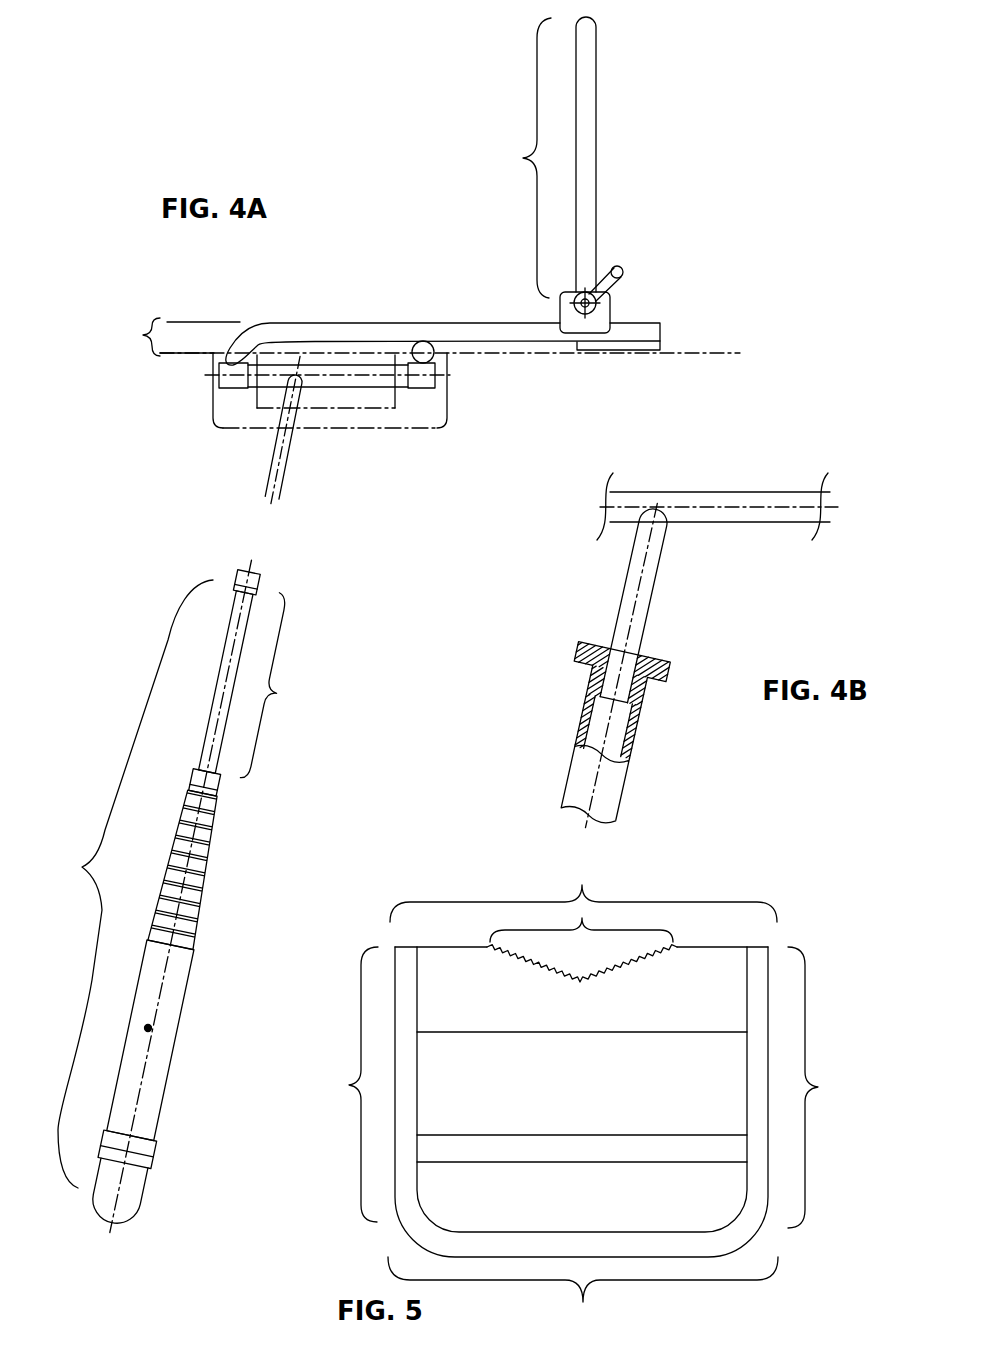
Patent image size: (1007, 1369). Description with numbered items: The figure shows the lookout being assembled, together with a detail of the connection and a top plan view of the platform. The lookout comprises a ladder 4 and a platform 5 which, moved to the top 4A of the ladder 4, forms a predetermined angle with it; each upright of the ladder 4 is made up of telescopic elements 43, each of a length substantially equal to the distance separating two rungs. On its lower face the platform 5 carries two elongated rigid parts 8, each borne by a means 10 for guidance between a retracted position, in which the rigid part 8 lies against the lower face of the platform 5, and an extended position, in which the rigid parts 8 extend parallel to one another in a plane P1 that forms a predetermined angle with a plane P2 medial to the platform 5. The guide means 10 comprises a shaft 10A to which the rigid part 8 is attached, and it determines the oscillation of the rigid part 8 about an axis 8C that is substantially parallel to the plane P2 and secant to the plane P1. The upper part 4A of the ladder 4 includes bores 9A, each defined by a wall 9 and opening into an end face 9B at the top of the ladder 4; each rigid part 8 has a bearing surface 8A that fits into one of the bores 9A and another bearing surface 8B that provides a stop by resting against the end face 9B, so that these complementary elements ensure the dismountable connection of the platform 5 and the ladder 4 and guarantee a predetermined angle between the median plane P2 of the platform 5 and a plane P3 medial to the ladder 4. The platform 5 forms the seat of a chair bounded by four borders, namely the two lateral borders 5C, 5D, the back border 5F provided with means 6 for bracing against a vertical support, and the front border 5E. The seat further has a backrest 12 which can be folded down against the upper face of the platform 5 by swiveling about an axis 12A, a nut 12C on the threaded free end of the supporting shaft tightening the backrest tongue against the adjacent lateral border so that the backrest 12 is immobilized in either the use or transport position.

In FIG. 4A, the backrest 12 is at (518, 158).
In FIG. 4A, the swiveling axis 12A is at (597, 302).
In FIG. 4A, the nut 12C is at (629, 242).
In FIG. 4A, the medial plane of platform P2 is at (737, 353).
In FIG. 4A, the platform 5 is at (143, 335).
In FIG. 5, the platform 5 is at (345, 1190).
In FIG. 4A, the means for guidance 10 is at (440, 415).
In FIG. 4A, the axis 8C is at (447, 377).
In FIG. 4A, the shaft 10A is at (352, 382).
In FIG. 4B, the shaft 10A is at (778, 498).
In FIG. 4A, the elongated rigid part 8 is at (258, 454).
In FIG. 4B, the elongated rigid part 8 is at (612, 612).
In FIG. 4A, the plane P1 is at (260, 494).
In FIG. 4A, the ladder 4 is at (75, 866).
In FIG. 4A, the top of ladder 4A is at (217, 570).
In FIG. 4A, the telescopic element 43 is at (284, 693).
In FIG. 4A, the medial plane of ladder P3 is at (148, 1028).
In FIG. 4B, the bearing surface 8A is at (627, 573).
In FIG. 4B, the bearing surface 8B is at (673, 527).
In FIG. 4B, the end face 9B is at (661, 691).
In FIG. 4B, the bore 9A is at (617, 722).
In FIG. 4B, the wall 9 is at (620, 758).
In FIG. 5, the means for bracing 6 is at (584, 912).
In FIG. 5, the back border 5F is at (582, 878).
In FIG. 5, the lateral border 5C is at (346, 1084).
In FIG. 5, the lateral border 5D is at (823, 1088).
In FIG. 5, the front border 5E is at (585, 1305).